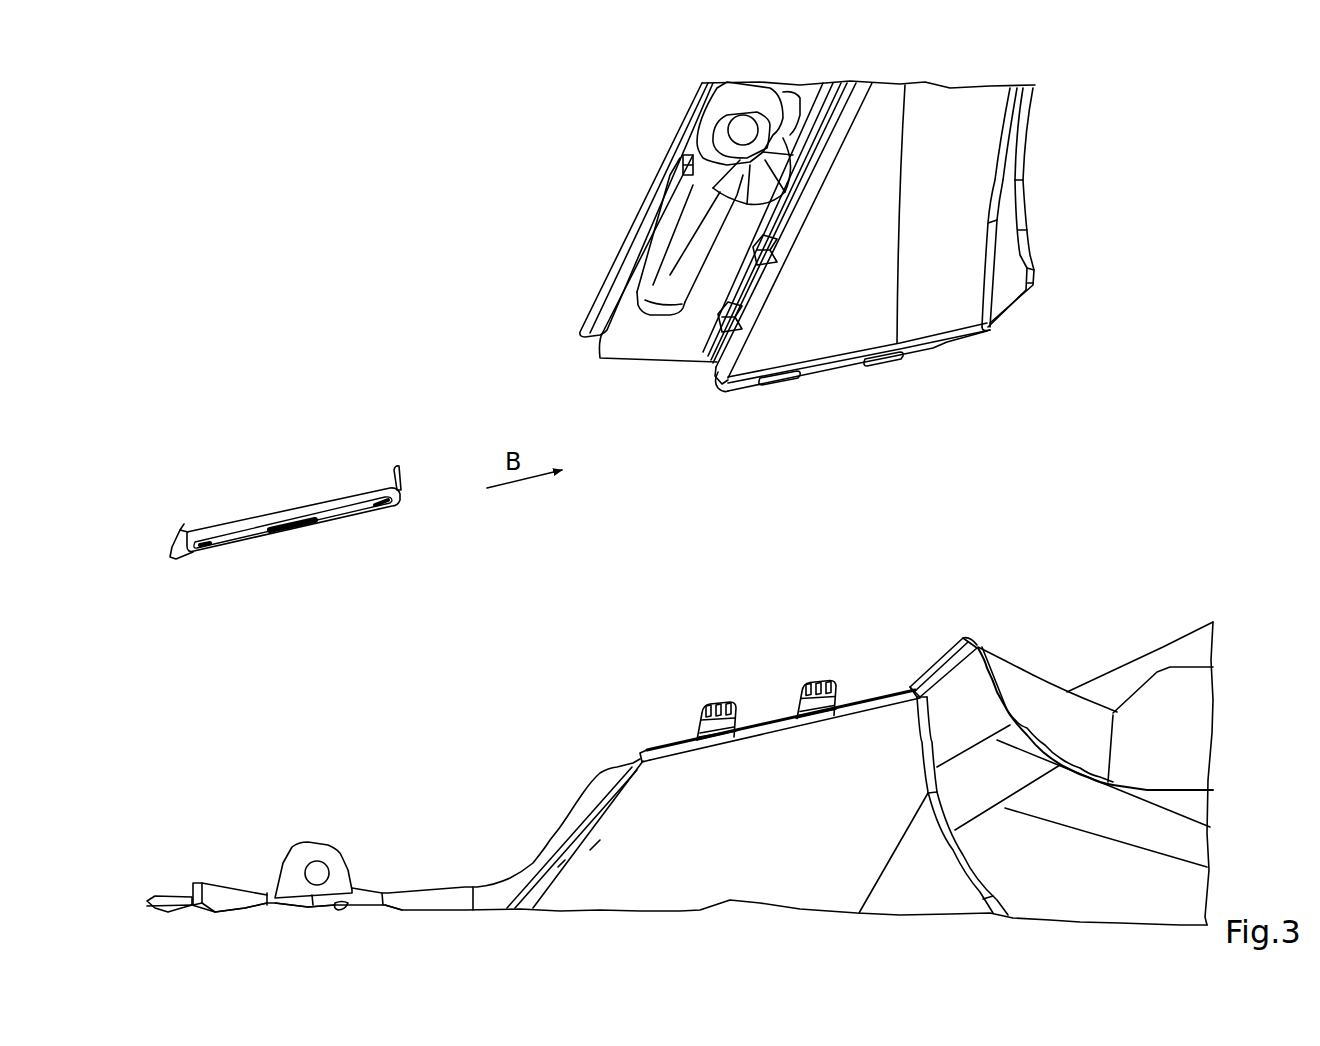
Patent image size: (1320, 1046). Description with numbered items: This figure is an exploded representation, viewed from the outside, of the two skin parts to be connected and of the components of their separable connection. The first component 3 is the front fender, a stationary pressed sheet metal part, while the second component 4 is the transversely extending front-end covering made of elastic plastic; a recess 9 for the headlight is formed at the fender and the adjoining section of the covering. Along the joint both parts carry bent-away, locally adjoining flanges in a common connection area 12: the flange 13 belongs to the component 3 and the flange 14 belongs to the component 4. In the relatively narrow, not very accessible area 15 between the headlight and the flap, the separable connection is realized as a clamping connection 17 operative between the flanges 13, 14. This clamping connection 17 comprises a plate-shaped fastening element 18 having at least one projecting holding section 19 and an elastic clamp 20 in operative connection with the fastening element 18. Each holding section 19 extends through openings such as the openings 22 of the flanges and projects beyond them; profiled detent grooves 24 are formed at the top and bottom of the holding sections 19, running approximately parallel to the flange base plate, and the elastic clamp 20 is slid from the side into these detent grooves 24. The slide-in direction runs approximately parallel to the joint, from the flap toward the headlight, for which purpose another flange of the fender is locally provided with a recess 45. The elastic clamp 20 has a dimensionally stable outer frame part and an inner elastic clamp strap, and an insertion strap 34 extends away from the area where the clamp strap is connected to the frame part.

The first component 3 is at (990, 134).
The second component 4 is at (582, 884).
The recess 9 is at (1047, 680).
The connection area 12 is at (1010, 410).
The flange 13 is at (835, 377).
The flange 14 is at (668, 738).
The area 15 is at (885, 507).
The clamping connection 17 is at (652, 525).
The plate-shaped fastening element 18 is at (858, 690).
The holding section 19 is at (716, 702).
The elastic clamp 20 is at (188, 562).
The opening 22 is at (770, 392).
The detent groove 24 is at (780, 718).
The insertion strap 34 is at (395, 467).
The recess 45 is at (703, 372).